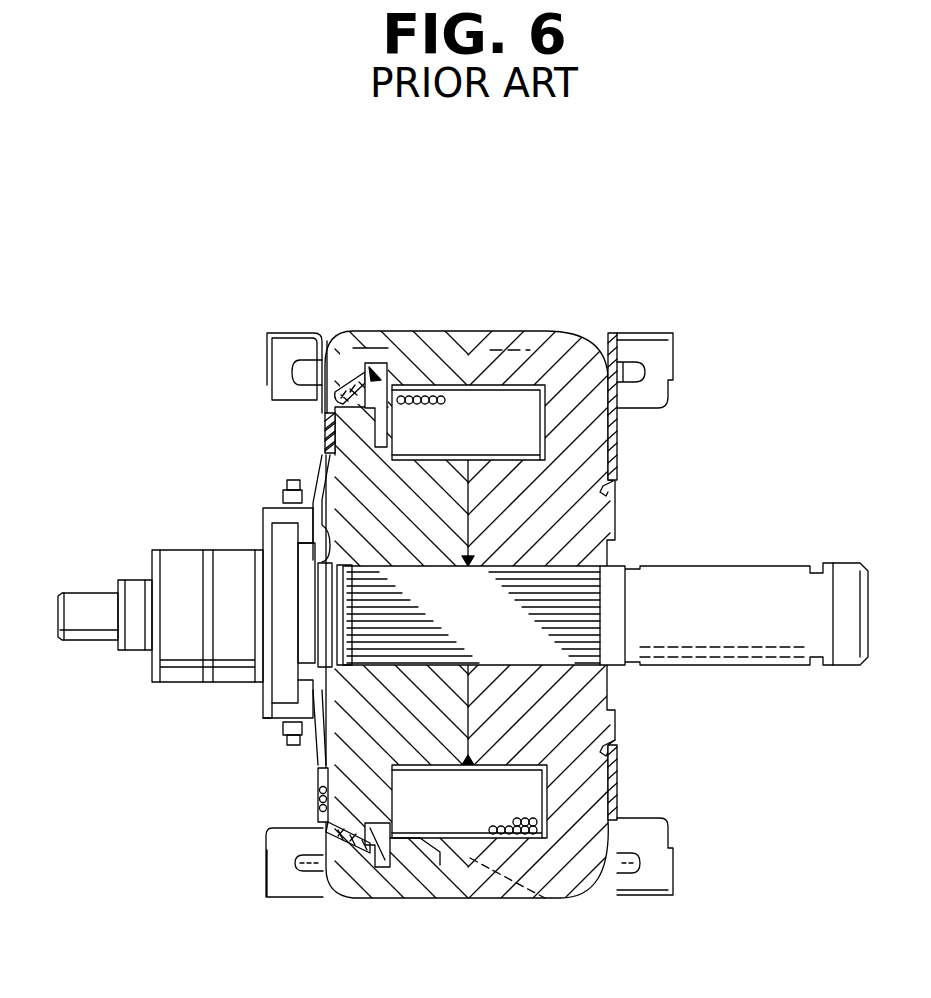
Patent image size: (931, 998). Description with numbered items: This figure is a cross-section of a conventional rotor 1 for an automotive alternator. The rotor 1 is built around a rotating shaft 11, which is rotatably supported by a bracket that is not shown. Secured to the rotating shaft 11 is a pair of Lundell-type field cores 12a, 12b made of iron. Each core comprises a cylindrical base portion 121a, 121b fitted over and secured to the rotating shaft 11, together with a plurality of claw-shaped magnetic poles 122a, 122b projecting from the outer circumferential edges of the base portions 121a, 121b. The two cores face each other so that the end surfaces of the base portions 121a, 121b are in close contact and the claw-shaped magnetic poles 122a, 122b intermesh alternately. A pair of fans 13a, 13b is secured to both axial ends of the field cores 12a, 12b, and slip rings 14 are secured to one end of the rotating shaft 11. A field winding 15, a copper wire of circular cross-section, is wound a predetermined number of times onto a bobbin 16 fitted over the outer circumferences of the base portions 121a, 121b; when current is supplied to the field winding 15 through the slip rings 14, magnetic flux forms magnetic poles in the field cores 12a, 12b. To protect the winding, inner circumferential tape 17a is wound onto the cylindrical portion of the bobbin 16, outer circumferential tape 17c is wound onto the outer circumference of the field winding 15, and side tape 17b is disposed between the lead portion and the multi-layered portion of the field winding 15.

The rotor 1 is at (801, 247).
The rotating shaft 11 is at (743, 583).
The Lundell-type field core 12a is at (358, 424).
The Lundell-type field core 12b is at (592, 330).
The fan 13a is at (285, 360).
The fan 13b is at (658, 355).
The slip rings 14 is at (227, 568).
The field winding 15 is at (435, 402).
The bobbin 16 is at (347, 337).
The inner circumferential tape 17a is at (518, 453).
The side tape 17b is at (328, 452).
The outer circumferential tape 17c is at (510, 385).
The cylindrical base portion 121a is at (385, 722).
The cylindrical base portion 121b is at (528, 518).
The claw-shaped magnetic poles 122a is at (373, 333).
The claw-shaped magnetic poles 122b is at (430, 331).